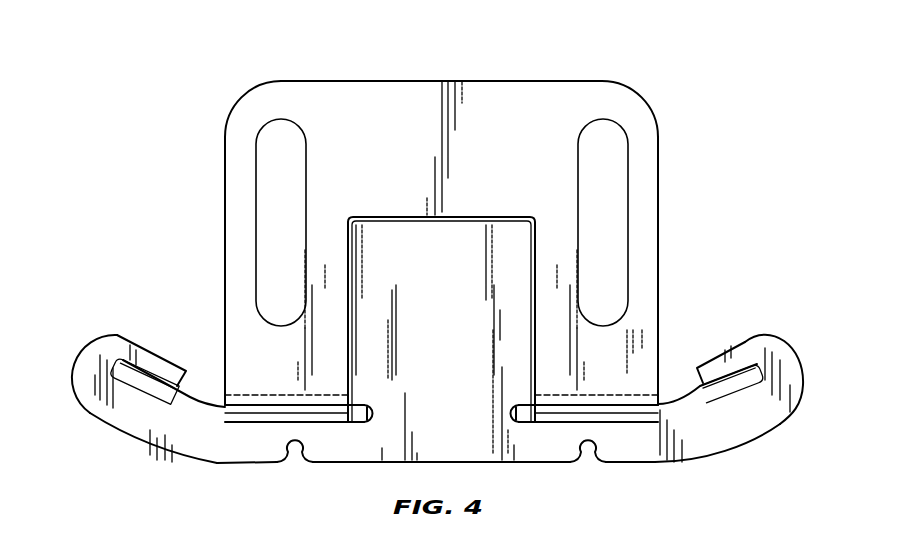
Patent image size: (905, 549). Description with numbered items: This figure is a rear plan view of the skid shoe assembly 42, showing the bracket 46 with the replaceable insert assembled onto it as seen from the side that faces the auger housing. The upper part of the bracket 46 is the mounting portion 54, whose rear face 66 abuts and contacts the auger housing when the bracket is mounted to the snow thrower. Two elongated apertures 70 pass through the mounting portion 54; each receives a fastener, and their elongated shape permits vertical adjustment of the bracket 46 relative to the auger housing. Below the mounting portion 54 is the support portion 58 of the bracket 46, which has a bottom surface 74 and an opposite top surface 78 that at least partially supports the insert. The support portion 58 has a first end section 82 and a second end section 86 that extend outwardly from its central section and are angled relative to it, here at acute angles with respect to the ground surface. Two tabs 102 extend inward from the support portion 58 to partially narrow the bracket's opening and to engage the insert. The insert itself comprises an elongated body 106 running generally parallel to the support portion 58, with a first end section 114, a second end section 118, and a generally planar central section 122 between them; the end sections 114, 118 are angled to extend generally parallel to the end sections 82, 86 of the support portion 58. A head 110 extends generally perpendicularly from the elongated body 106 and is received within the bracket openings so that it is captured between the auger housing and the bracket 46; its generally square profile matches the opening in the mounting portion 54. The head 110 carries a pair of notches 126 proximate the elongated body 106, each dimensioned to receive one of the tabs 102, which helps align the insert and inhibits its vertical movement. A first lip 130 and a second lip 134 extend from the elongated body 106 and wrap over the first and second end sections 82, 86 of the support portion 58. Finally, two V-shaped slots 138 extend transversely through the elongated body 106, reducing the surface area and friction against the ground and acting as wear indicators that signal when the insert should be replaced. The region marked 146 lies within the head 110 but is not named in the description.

The skid shoe assembly 42 is at (137, 60).
The bracket 46 is at (556, 80).
The mounting portion 54 is at (318, 80).
The support portion 58 is at (703, 423).
The rear face 66 is at (521, 163).
The elongated apertures 70 is at (262, 157).
The bottom surface 74 is at (203, 442).
The top surface 78 is at (223, 405).
The first end section 82 is at (140, 388).
The second end section 86 is at (740, 397).
The tabs 102 is at (357, 418).
The elongated body 106 is at (383, 448).
The head 110 is at (418, 215).
The first end section 114 is at (78, 375).
The second end section 118 is at (798, 382).
The central section 122 is at (483, 452).
The notches 126 is at (375, 413).
The first lip 130 is at (150, 358).
The second lip 134 is at (718, 367).
The V-shaped slots 138 is at (288, 457).
The channel interior 146 is at (422, 270).